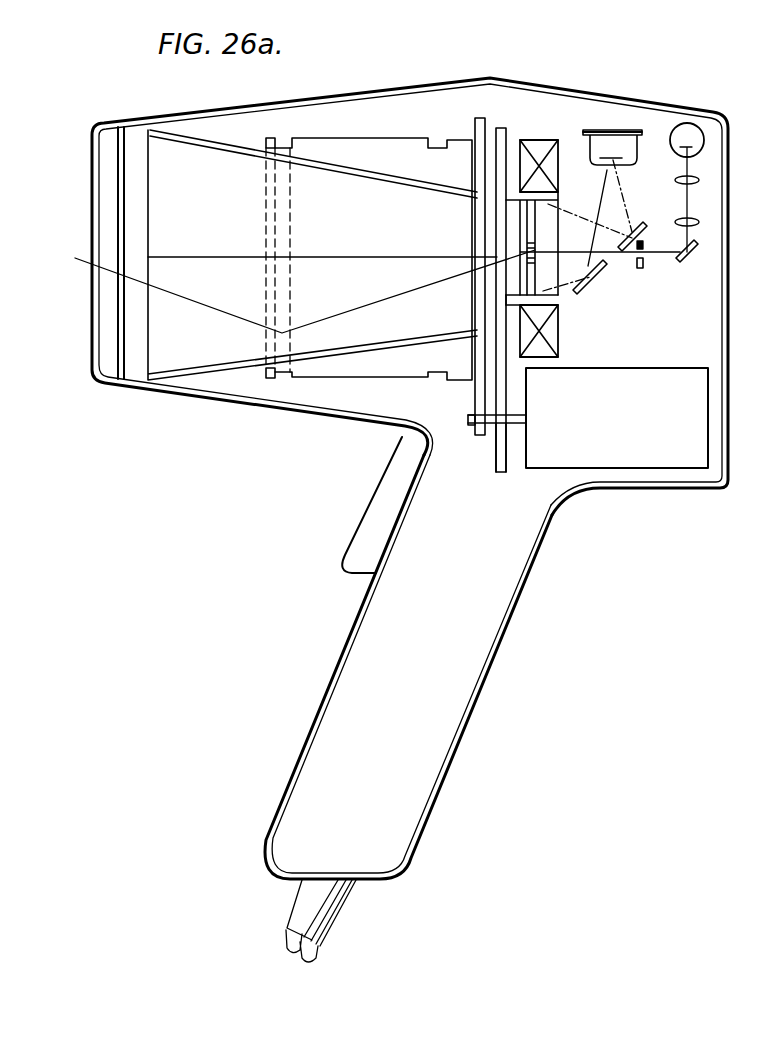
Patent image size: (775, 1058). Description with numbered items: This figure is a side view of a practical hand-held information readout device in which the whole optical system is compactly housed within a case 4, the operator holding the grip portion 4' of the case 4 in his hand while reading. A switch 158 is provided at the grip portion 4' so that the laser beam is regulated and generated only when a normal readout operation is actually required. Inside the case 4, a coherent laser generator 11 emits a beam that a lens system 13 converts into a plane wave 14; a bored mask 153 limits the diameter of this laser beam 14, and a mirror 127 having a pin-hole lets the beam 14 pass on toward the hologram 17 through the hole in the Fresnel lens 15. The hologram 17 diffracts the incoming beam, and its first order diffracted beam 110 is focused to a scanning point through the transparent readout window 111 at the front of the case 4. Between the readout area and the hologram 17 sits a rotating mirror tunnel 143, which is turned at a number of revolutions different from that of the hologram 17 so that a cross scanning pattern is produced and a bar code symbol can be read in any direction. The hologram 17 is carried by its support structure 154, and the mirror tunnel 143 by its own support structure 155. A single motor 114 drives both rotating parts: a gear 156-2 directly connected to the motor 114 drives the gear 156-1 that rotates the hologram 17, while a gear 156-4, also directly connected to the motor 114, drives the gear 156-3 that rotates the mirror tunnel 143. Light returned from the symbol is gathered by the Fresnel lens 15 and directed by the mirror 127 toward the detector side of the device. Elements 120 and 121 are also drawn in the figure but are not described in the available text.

The case 4 is at (410, 291).
The grip portion 4' is at (408, 708).
The coherent laser generator 11 is at (705, 140).
The lens system 13 is at (698, 192).
The plane wave 14 is at (668, 262).
The Fresnel lens 15 is at (530, 217).
The hologram 17 is at (520, 205).
The first order diffracted beam 110 is at (350, 311).
The transparent readout window 111 is at (118, 170).
The motor 114 is at (658, 462).
The light source assembly 120 is at (640, 150).
The lamp 121 is at (610, 157).
The mirror 127 is at (590, 290).
The mirror tunnel 143 is at (223, 142).
The bored mask 153 is at (645, 263).
The support structure for rotating the hologram 154 is at (555, 340).
The support structure for rotating the mirror tunnel 155 is at (363, 147).
The gear 156-1 is at (512, 355).
The gear 156-2 is at (502, 467).
The gear 156-3 is at (476, 392).
The gear 156-4 is at (470, 430).
The switch 158 is at (362, 517).